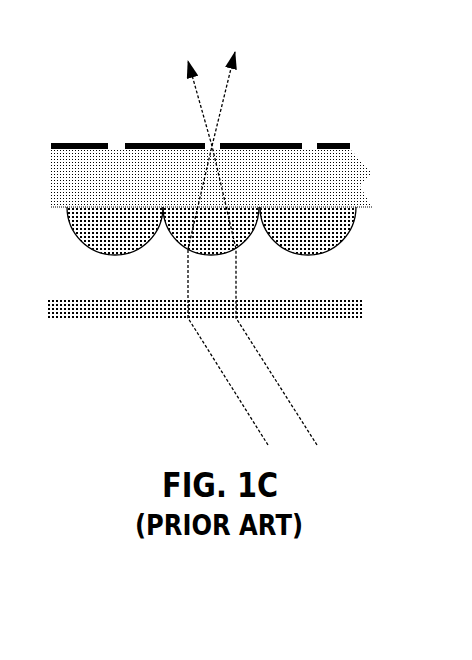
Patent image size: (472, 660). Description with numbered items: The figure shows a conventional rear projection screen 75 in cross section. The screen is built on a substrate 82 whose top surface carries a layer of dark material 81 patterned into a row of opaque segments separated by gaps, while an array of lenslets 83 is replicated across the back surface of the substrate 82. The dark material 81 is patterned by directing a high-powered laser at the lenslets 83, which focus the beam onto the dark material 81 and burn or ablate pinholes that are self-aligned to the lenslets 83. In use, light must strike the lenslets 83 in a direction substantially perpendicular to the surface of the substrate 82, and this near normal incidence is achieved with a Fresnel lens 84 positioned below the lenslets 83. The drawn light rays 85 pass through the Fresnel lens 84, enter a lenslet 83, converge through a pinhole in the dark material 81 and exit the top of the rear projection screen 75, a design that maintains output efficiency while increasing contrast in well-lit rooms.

The rear projection screen 75 is at (213, 174).
The dark material 81 is at (200, 131).
The substrate 82 is at (97, 189).
The lenslets 83 is at (119, 240).
The Fresnel lens 84 is at (205, 299).
The incident light rays 85 is at (256, 248).